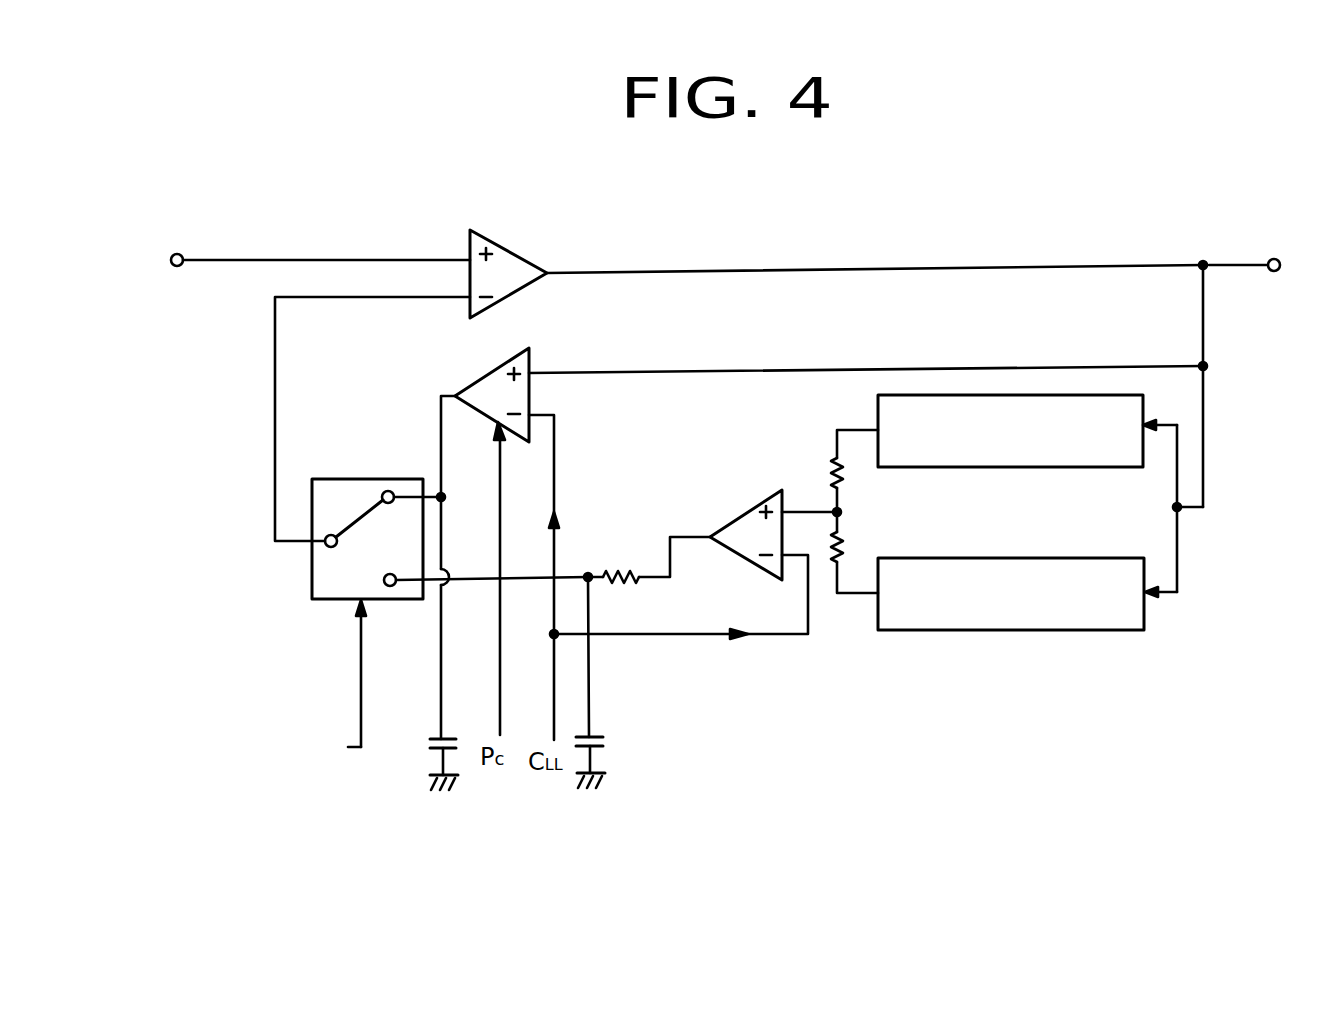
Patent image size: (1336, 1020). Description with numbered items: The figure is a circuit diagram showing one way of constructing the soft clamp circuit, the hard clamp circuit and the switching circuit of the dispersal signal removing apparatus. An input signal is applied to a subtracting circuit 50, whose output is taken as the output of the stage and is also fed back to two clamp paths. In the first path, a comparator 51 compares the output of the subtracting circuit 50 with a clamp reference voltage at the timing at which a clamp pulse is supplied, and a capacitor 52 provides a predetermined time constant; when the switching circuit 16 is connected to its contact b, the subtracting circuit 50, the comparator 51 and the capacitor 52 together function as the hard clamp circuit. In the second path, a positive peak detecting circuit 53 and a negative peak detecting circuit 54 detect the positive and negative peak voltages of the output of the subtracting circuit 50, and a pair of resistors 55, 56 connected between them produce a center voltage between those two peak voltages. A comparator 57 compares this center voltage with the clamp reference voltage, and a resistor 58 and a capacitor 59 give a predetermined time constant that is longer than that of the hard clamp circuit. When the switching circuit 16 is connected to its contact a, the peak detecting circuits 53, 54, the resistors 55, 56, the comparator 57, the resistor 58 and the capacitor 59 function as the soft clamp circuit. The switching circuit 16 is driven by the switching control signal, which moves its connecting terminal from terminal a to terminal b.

The switching circuit 16 is at (328, 601).
The subtracting circuit 50 is at (517, 258).
The comparator 51 is at (472, 382).
The capacitor 52 is at (430, 748).
The positive peak detecting circuit 53 is at (1090, 467).
The negative peak detecting circuit 54 is at (1090, 558).
The resistor 55 is at (845, 476).
The resistor 56 is at (846, 552).
The comparator 57 is at (738, 510).
The resistor 58 is at (616, 570).
The capacitor 59 is at (607, 740).